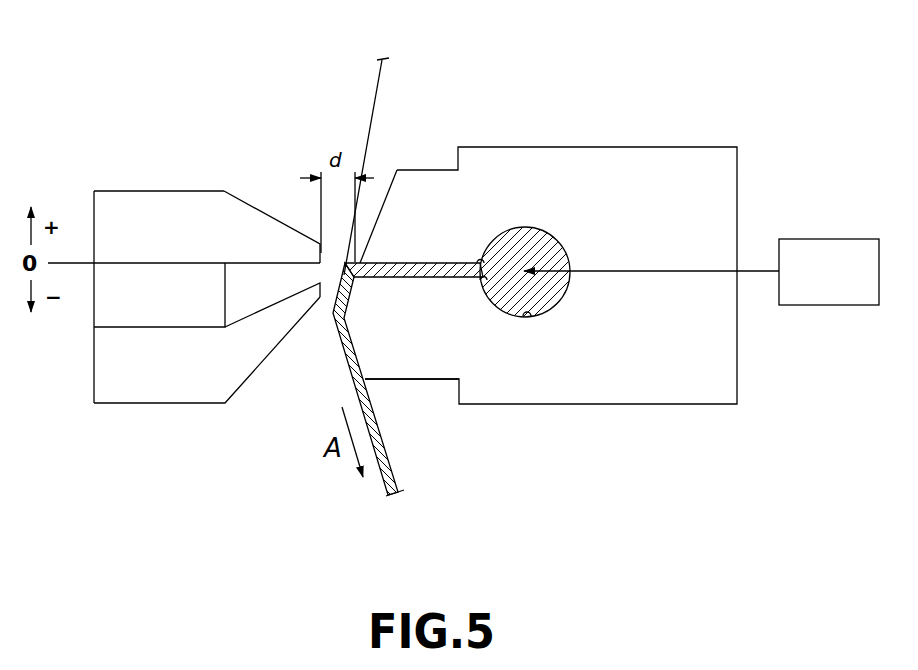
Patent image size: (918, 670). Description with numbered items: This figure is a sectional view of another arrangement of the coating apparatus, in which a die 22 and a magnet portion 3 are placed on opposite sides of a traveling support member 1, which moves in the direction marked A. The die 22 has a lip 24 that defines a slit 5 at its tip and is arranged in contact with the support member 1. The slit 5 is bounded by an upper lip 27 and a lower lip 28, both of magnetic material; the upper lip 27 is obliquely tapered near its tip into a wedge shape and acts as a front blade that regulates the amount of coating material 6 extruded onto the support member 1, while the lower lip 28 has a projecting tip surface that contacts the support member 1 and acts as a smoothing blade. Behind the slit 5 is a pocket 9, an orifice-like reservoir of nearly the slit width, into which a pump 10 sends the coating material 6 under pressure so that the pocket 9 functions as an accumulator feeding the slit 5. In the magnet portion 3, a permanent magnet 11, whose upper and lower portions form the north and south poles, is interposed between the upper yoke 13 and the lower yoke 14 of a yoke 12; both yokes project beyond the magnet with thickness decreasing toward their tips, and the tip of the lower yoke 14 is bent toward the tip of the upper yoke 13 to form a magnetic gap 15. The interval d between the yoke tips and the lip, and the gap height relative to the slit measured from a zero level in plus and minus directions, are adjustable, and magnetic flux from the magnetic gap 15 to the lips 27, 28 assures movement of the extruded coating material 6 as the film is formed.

The support member 1 is at (372, 92).
The magnet portion 3 is at (136, 170).
The slit 5 is at (485, 293).
The coating material 6 is at (525, 228).
The pocket 9 is at (528, 316).
The pump 10 is at (830, 239).
The permanent magnet 11 is at (103, 303).
The yoke 12 is at (172, 197).
The upper yoke 13 is at (240, 213).
The lower yoke 14 is at (250, 365).
The magnetic gap 15 is at (290, 285).
The die 22 is at (622, 130).
The lip 24 is at (422, 292).
The upper lip 27 is at (413, 177).
The lower lip 28 is at (422, 370).